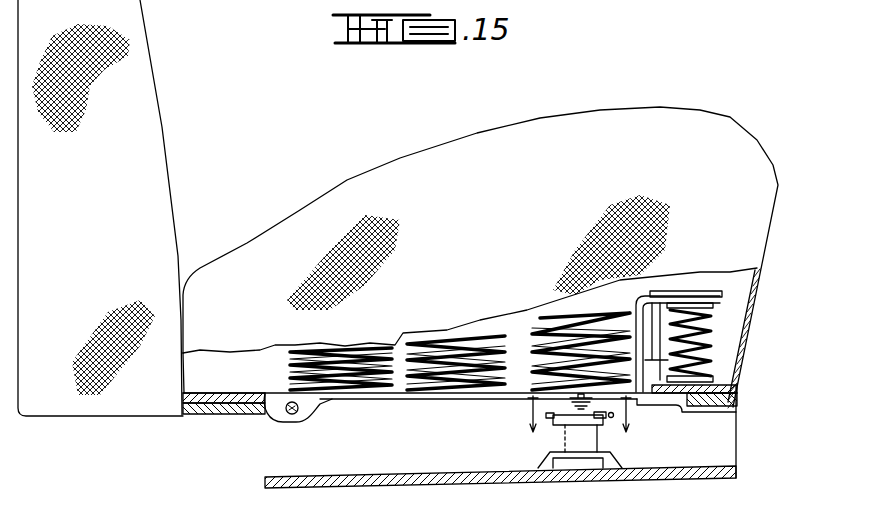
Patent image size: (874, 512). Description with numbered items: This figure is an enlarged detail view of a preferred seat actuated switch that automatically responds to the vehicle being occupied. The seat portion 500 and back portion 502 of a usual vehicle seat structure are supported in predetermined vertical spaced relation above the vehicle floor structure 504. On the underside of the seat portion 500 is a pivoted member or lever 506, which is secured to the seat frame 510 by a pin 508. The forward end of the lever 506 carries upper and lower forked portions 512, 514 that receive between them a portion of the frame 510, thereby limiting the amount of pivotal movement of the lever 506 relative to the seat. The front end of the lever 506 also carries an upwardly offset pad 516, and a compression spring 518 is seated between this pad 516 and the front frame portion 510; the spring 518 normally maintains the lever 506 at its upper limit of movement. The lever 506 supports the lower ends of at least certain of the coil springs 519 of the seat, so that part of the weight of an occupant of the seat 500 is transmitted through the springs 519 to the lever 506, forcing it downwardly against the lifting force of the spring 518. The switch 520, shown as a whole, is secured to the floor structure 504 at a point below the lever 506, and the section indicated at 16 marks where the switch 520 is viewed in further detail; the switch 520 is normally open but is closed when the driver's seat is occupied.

The seat portion 500 is at (468, 147).
The back portion 502 is at (148, 129).
The vehicle floor structure 504 is at (353, 475).
The pivoted member 506 is at (437, 395).
The pin 508 is at (293, 416).
The seat frame 510 is at (217, 391).
The upper forked portion 512 is at (660, 305).
The lower forked portion 514 is at (680, 404).
The upwardly offset pad 516 is at (688, 293).
The compression spring 518 is at (710, 325).
The coil springs 519 is at (443, 352).
The switch 520 is at (569, 395).
The section line for FIG. 16 is at (581, 426).